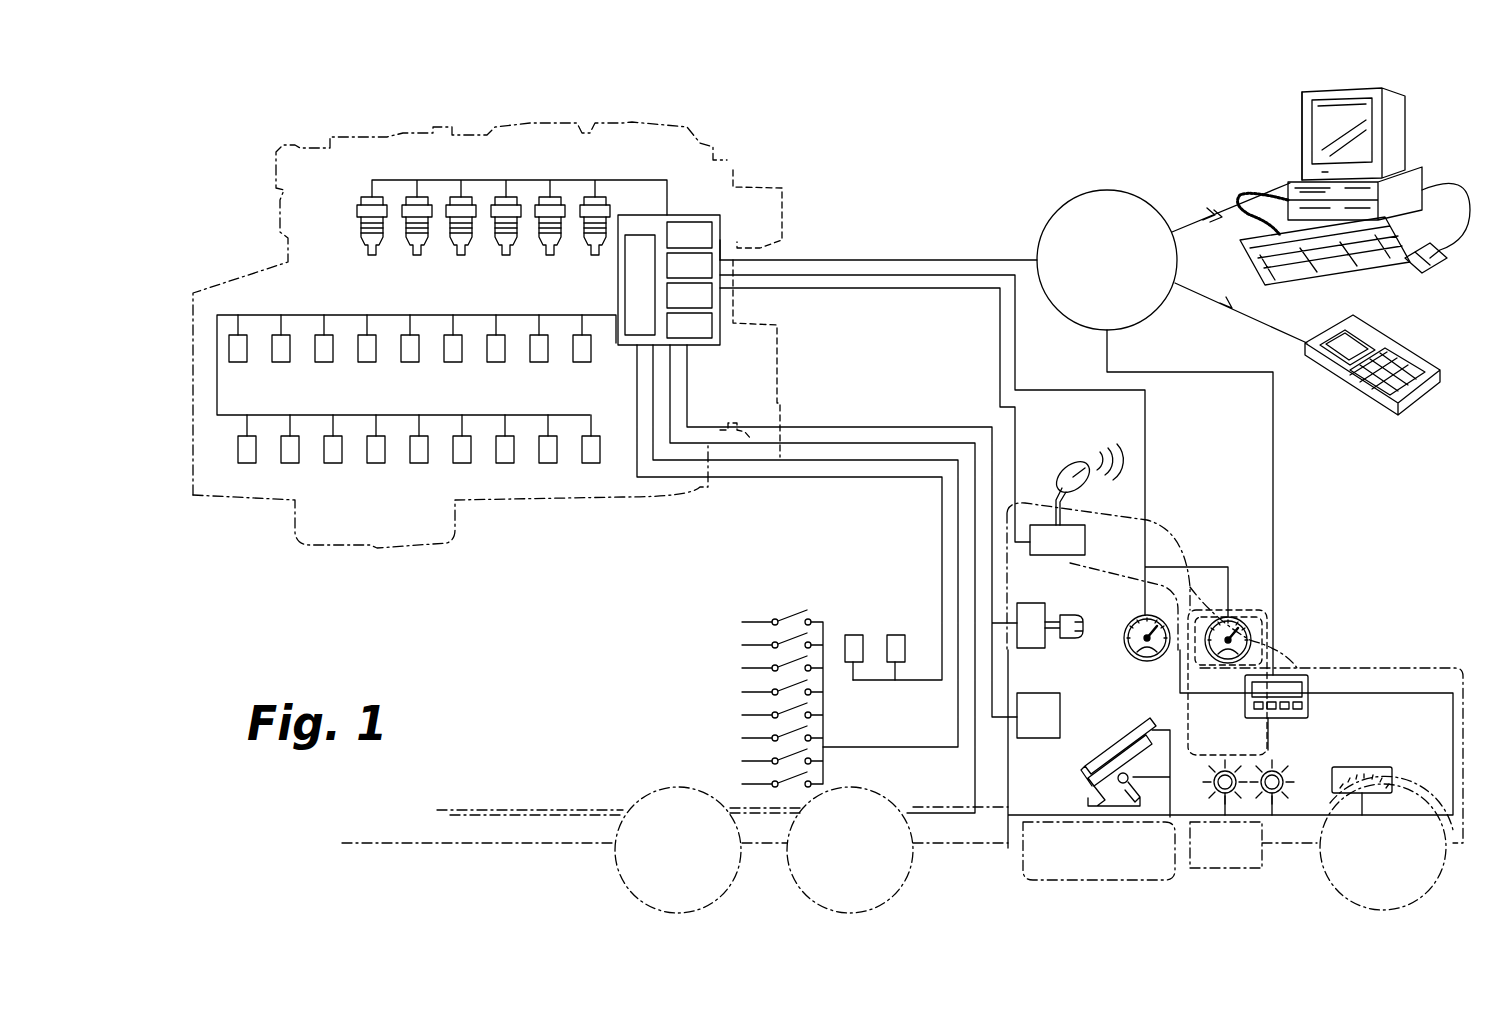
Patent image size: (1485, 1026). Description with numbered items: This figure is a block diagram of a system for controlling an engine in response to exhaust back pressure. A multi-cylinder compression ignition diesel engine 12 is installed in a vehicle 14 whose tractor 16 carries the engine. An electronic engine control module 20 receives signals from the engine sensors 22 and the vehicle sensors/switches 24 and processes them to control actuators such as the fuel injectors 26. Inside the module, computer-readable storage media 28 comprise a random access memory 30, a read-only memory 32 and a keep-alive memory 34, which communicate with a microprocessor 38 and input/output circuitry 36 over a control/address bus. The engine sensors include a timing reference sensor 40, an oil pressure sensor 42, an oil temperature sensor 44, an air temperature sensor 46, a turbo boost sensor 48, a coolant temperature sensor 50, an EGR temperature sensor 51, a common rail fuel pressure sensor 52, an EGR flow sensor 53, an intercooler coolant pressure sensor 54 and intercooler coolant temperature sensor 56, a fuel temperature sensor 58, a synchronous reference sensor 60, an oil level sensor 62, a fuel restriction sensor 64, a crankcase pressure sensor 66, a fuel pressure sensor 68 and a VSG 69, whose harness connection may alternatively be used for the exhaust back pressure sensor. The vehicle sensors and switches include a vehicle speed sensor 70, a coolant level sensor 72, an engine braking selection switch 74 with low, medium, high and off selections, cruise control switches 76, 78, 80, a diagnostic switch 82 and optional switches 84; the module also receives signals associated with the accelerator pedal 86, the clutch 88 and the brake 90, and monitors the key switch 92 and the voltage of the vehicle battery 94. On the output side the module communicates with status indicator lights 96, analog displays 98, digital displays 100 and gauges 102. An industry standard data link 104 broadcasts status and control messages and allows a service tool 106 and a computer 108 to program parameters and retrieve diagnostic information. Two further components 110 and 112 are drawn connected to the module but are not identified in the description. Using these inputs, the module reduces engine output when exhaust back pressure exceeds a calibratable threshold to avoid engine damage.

The diesel engine 12 is at (530, 123).
The vehicle 14 is at (1178, 525).
The tractor 16 is at (1357, 665).
The electronic engine control module 20 is at (690, 215).
The engine sensors 22 is at (215, 413).
The vehicle sensors/switches 24 is at (568, 665).
The fuel injectors 26 is at (420, 160).
The computer-readable storage media 28 is at (720, 245).
The random access memory 30 is at (700, 222).
The read-only memory 32 is at (712, 265).
The keep-alive memory 34 is at (712, 292).
The input/output circuitry 36 is at (712, 330).
The microprocessor 38 is at (625, 275).
The timing reference sensor 40 is at (591, 345).
The oil pressure sensor 42 is at (548, 345).
The oil temperature sensor 44 is at (505, 345).
The air temperature sensor 46 is at (462, 345).
The turbo boost sensor 48 is at (419, 345).
The coolant temperature sensor 50 is at (376, 345).
The EGR temperature sensor 51 is at (290, 345).
The common rail fuel pressure sensor 52 is at (333, 345).
The EGR flow sensor 53 is at (247, 345).
The intercooler coolant pressure sensor 54 is at (256, 446).
The intercooler coolant temperature sensor 56 is at (299, 446).
The fuel temperature sensor 58 is at (342, 446).
The synchronous reference sensor 60 is at (385, 446).
The oil level sensor 62 is at (428, 446).
The fuel restriction sensor 64 is at (471, 446).
The crankcase pressure sensor 66 is at (514, 446).
The fuel pressure sensor 68 is at (557, 446).
The VSG sensor 69 is at (600, 446).
The VSS vehicle speed sensor 70 is at (905, 655).
The coolant level sensor 72 is at (863, 655).
The engine braking selection switch 74 is at (590, 738).
The cruise control switch 76 is at (642, 715).
The cruise control switch 78 is at (660, 692).
The cruise control switch 80 is at (665, 668).
The diagnostic switch 82 is at (684, 645).
The optional switches 84 is at (692, 622).
The accelerator pedal 86 is at (1083, 785).
The clutch 88 is at (1160, 730).
The brake 90 is at (1132, 725).
The key switch 92 is at (1052, 648).
The vehicle battery 94 is at (1025, 738).
The status indicators/lights 96 is at (1298, 760).
The analog displays 98 is at (1368, 765).
The digital displays 100 is at (1245, 693).
The analog/digital gauges 102 is at (1126, 600).
The data link 104 is at (1117, 178).
The service tool 106 is at (1380, 330).
The computer 108 is at (1410, 140).
The transceiver 110 is at (1085, 542).
The antenna 112 is at (1060, 460).